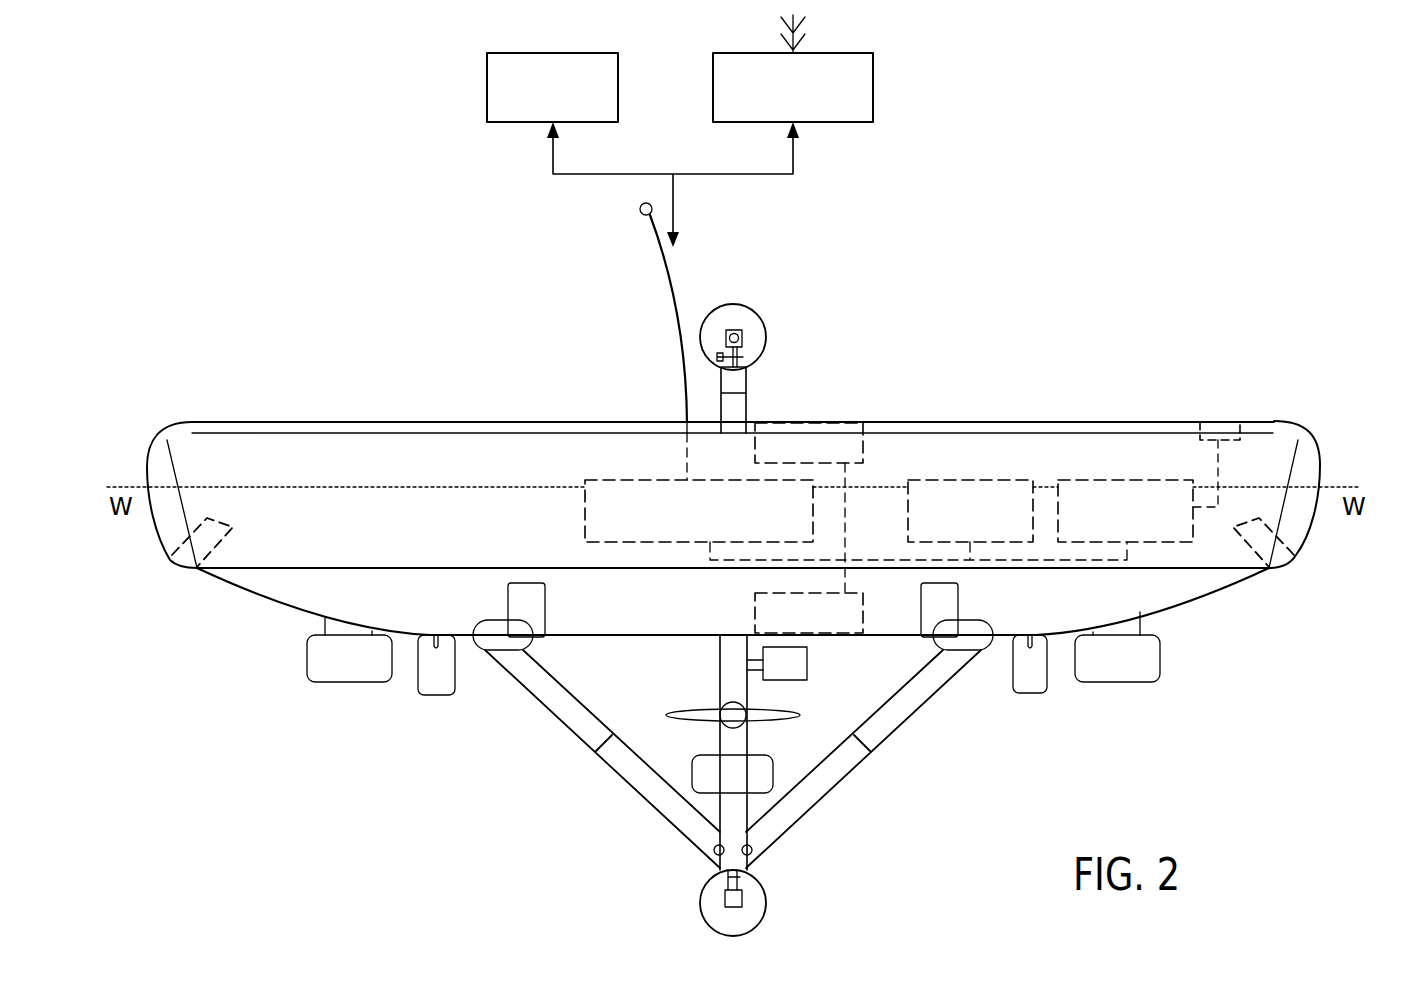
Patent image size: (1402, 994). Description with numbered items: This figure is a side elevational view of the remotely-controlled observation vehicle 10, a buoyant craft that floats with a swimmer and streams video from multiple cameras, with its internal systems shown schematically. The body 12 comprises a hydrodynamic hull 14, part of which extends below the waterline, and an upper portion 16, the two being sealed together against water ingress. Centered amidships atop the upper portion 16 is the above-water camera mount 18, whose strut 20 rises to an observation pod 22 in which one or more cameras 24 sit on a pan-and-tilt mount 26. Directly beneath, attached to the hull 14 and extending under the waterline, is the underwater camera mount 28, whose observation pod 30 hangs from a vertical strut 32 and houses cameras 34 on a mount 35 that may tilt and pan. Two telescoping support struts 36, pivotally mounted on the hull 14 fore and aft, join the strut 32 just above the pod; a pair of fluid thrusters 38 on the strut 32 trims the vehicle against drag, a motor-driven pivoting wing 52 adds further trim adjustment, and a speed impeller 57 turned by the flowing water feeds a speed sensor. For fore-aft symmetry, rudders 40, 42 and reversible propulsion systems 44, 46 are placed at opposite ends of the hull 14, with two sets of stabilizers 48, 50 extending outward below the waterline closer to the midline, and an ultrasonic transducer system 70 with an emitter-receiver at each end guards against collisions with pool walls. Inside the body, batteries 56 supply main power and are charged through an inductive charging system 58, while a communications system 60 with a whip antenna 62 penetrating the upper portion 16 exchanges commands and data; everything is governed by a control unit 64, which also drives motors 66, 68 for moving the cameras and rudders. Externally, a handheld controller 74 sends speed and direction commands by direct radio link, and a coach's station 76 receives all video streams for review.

The remotely-controlled observation vehicle 10 is at (733, 475).
The body 12 is at (1152, 414).
The hydrodynamic hull 14 is at (1188, 595).
The upper portion 16 is at (1032, 420).
The above-water camera mount 18 is at (774, 336).
The strut 20 is at (740, 406).
The observation pod 22 is at (731, 304).
The cameras 24 is at (742, 337).
The mount 26 is at (745, 355).
The underwater camera mount 28 is at (744, 725).
The observation pod 30 is at (698, 902).
The vertical strut 32 is at (720, 670).
The cameras 34 is at (742, 900).
The mount 35 is at (740, 878).
The telescoping support struts 36 is at (655, 793).
The fluid thrusters 38 is at (763, 773).
The rudder 40 is at (428, 688).
The rudder 42 is at (1035, 687).
The propulsion system 44 is at (322, 673).
The propulsion system 46 is at (1148, 665).
The stabilizers 48 is at (508, 597).
The stabilizers 50 is at (958, 593).
The pivoting wing 52 is at (800, 716).
The batteries 56 is at (1105, 477).
The speed impeller 57 is at (807, 663).
The inductive charging system 58 is at (1222, 420).
The communications system 60 is at (585, 520).
The whip antenna 62 is at (680, 322).
The control unit 64 is at (970, 480).
The motor 66 is at (753, 617).
The motor 68 is at (863, 447).
The ultrasonic transducer system 70 is at (177, 570).
The handheld controller 74 is at (873, 88).
The coach's station 76 is at (618, 88).